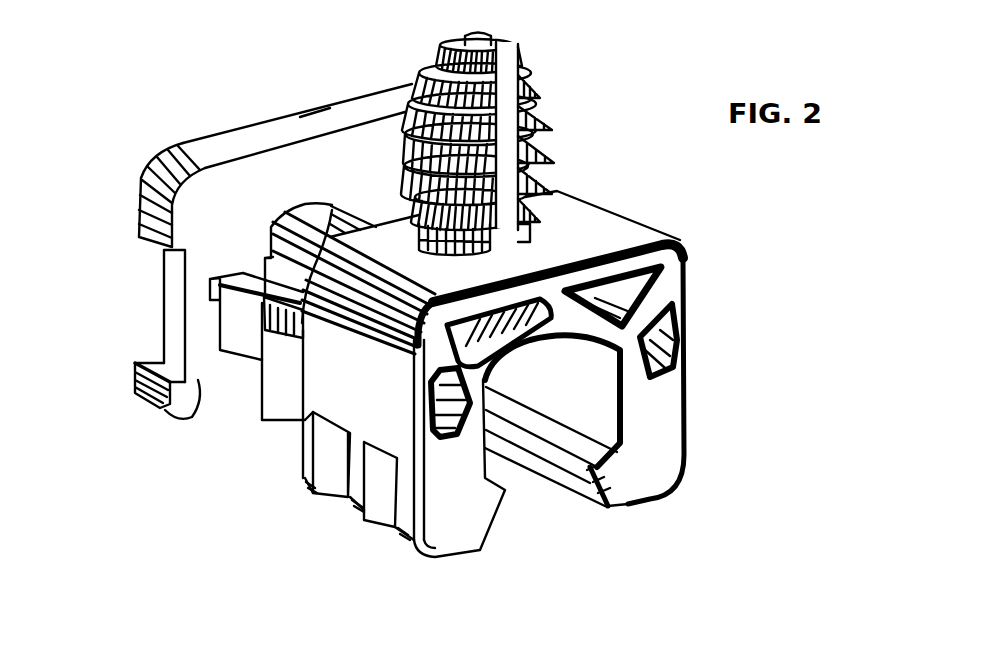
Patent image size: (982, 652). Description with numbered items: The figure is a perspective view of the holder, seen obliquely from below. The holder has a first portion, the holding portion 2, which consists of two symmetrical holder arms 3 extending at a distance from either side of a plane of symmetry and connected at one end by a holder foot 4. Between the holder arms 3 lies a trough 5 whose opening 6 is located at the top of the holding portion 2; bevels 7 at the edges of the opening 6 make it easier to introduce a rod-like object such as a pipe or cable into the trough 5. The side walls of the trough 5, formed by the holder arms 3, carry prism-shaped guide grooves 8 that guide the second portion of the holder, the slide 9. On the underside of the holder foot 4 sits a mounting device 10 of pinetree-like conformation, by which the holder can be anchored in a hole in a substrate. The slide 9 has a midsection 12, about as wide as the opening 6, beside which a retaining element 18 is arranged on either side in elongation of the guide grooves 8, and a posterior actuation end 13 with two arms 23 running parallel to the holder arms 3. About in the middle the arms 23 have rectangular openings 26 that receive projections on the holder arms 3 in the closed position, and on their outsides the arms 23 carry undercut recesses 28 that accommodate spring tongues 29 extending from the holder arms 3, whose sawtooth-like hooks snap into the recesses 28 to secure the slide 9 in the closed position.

The holding portion 2 is at (682, 240).
The holder arms 3 is at (667, 413).
The holder foot 4 is at (537, 267).
The trough 5 is at (550, 362).
The opening 6 is at (550, 450).
The bevels 7 is at (573, 483).
The guide grooves 8 is at (597, 440).
The slide 9 is at (176, 150).
The mounting device 10 is at (540, 78).
The midsection 12 is at (327, 203).
The actuation end 13 is at (307, 117).
The retaining element 18 is at (242, 338).
The arms 23 is at (192, 417).
The rectangular openings 26 is at (227, 308).
The undercut recesses 28 is at (173, 282).
The spring tongues 29 is at (287, 383).